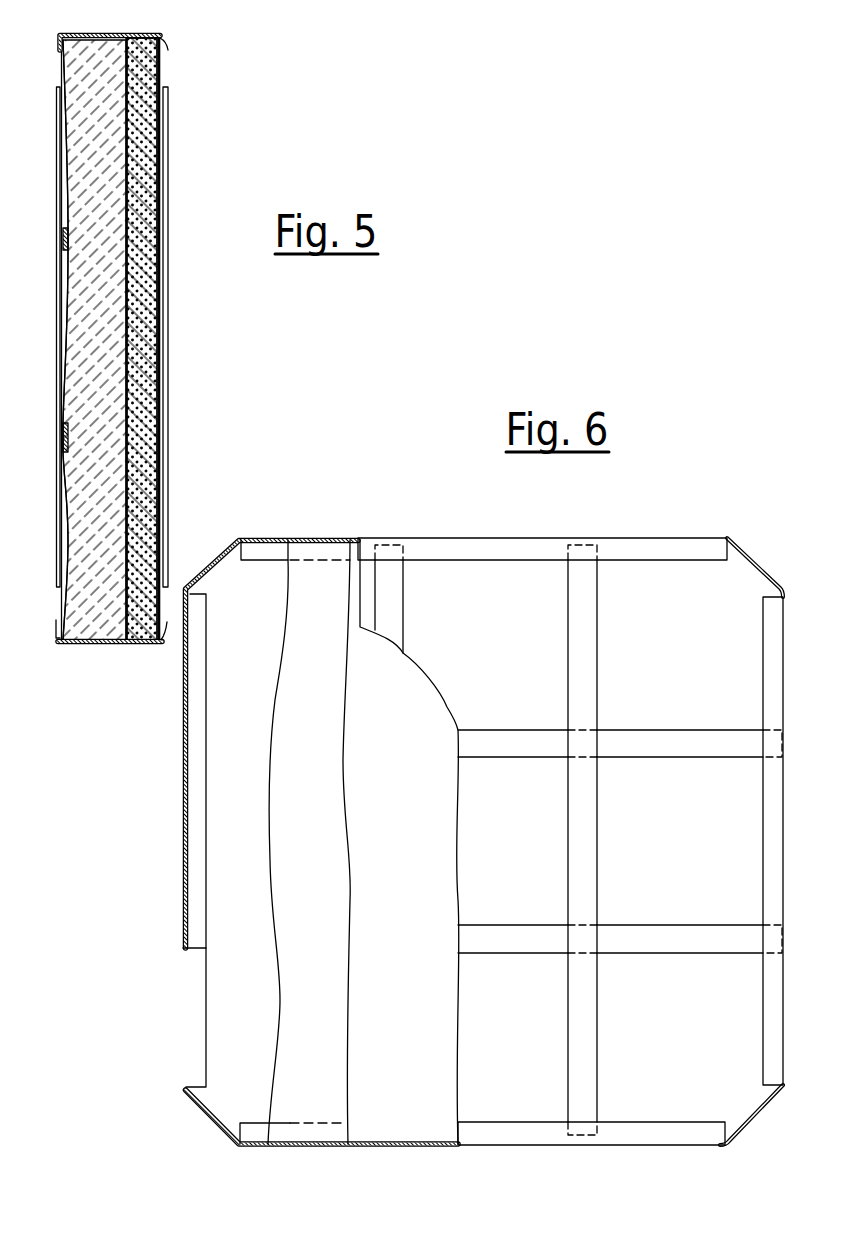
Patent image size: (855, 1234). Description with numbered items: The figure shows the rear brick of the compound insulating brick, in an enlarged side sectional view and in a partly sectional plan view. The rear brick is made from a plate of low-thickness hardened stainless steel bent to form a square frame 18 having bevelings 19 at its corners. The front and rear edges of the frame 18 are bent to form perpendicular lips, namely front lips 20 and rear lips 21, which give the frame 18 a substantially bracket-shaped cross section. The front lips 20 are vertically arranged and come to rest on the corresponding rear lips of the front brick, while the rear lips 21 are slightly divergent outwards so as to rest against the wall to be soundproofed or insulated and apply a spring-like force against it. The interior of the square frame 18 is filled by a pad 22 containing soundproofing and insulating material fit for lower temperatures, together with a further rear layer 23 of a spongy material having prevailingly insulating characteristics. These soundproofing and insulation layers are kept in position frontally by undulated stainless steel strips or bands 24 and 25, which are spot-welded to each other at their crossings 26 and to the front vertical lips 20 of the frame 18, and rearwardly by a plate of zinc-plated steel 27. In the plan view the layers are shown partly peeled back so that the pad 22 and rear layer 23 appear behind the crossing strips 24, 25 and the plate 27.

In FIG. 5, the frame 18 is at (114, 33).
In FIG. 6, the frame 18 is at (318, 540).
In FIG. 6, the bevelings 19 is at (206, 562).
In FIG. 5, the front lips 20 is at (62, 37).
In FIG. 6, the front lips 20 is at (513, 548).
In FIG. 5, the rear lips 21 is at (168, 47).
In FIG. 6, the rear lips 21 is at (267, 557).
In FIG. 5, the pad 22 is at (83, 205).
In FIG. 6, the pad 22 is at (730, 677).
In FIG. 5, the rear layer 23 is at (143, 133).
In FIG. 6, the rear layer 23 is at (372, 690).
In FIG. 5, the undulated strips 24 is at (68, 158).
In FIG. 6, the undulated strips 24 is at (393, 583).
In FIG. 5, the undulated strips 25 is at (65, 248).
In FIG. 6, the undulated strips 25 is at (743, 742).
In FIG. 6, the crossings 26 is at (598, 735).
In FIG. 5, the plate of zinc-plated steel 27 is at (160, 175).
In FIG. 6, the plate of zinc-plated steel 27 is at (293, 878).